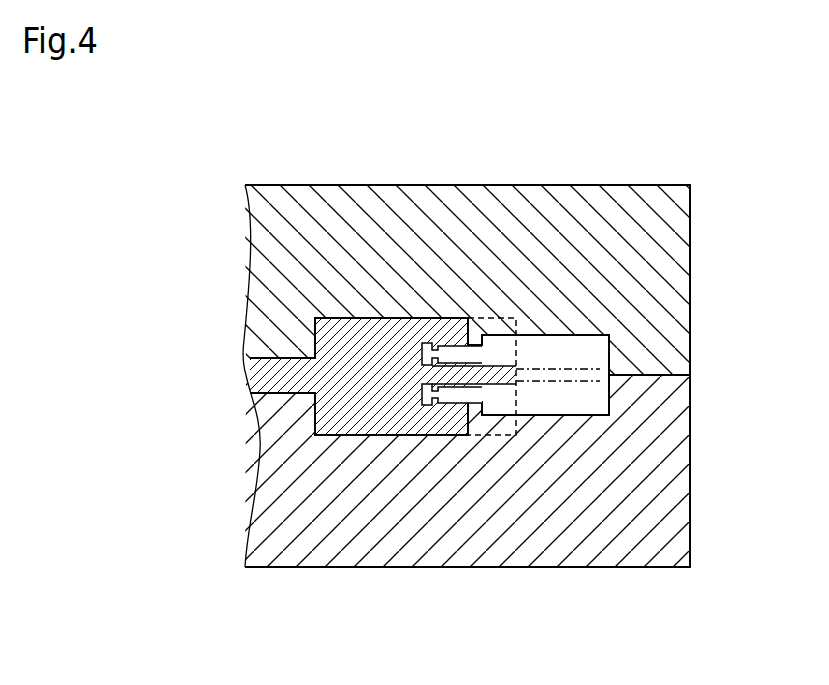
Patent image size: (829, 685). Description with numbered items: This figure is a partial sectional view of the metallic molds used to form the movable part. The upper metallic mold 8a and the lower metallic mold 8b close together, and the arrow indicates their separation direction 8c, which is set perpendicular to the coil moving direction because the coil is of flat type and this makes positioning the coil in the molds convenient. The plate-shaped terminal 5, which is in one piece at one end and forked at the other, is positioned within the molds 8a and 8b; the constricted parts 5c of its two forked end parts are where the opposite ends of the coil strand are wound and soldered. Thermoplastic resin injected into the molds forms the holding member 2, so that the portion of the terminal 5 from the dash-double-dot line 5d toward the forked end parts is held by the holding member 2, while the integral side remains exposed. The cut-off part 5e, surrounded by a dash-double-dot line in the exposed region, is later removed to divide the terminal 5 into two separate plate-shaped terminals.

The holding member 2 is at (350, 417).
The plate-shaped terminal 5 is at (570, 348).
The constricted parts 5c is at (420, 393).
The dash-double-dot line 5d is at (518, 320).
The cut-off part 5e is at (608, 338).
The upper metallic mold 8a is at (680, 205).
The lower metallic mold 8b is at (680, 547).
The separation direction 8c is at (733, 332).